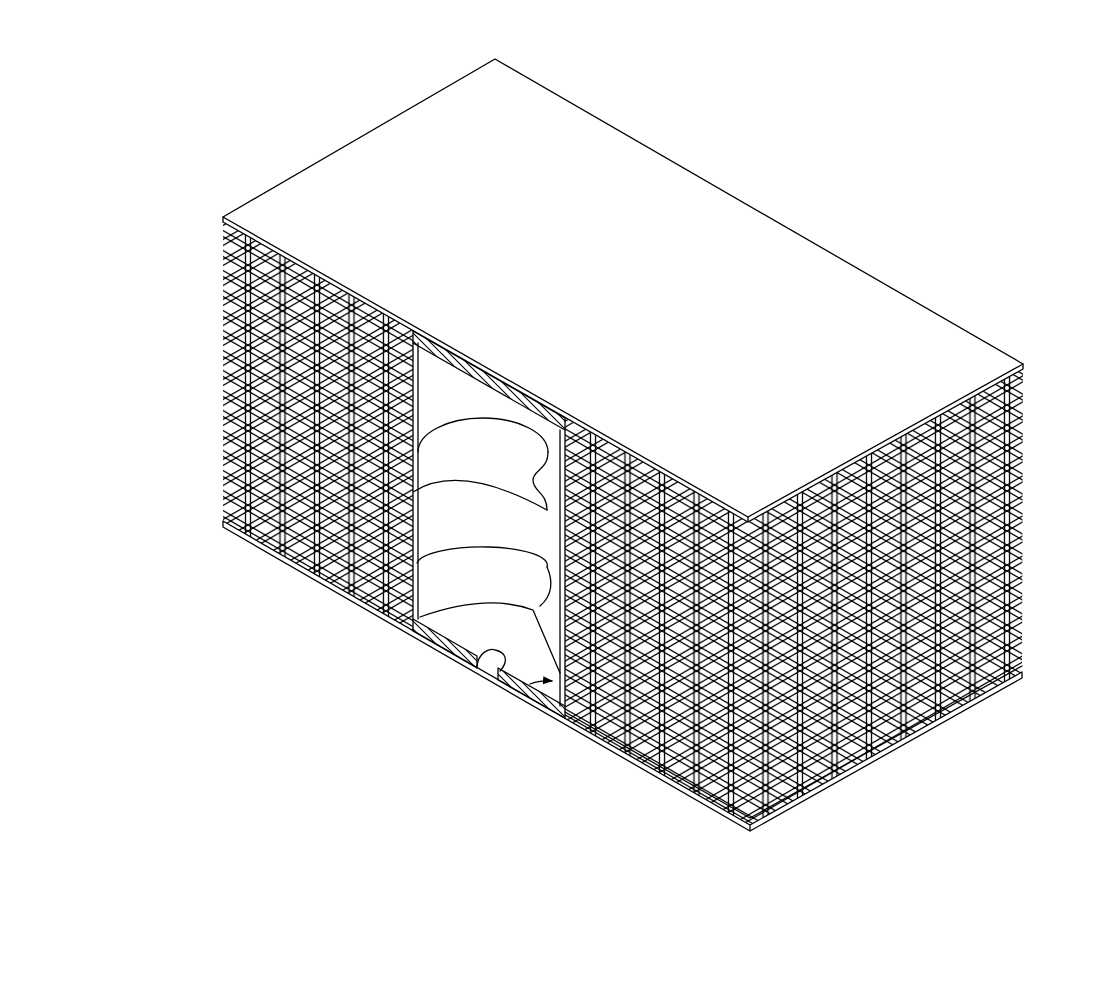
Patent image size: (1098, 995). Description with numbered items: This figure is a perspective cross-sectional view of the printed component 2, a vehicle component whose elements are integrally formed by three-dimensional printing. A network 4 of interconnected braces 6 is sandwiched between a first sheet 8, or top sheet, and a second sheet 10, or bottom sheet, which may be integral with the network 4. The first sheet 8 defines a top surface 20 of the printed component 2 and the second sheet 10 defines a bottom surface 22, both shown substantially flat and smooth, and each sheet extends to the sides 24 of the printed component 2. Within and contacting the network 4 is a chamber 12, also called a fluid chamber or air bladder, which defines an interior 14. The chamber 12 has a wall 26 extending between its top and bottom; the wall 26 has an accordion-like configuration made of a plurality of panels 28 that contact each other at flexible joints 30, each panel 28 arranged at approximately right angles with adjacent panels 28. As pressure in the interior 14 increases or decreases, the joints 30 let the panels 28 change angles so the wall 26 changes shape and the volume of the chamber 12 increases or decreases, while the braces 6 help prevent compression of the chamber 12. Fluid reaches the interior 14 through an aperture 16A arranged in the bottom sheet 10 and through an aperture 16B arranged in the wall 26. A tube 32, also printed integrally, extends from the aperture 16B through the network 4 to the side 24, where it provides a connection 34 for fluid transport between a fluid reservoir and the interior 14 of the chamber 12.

The printed component 2 is at (205, 83).
The network 4 is at (208, 230).
The braces 6 is at (298, 488).
The first sheet 8 is at (452, 105).
The second sheet 10 is at (823, 775).
The chamber 12 is at (433, 337).
The interior 14 is at (475, 595).
The aperture 16A is at (484, 683).
The aperture 16B is at (523, 688).
The top surface 20 is at (906, 334).
The bottom surface 22 is at (993, 694).
The sides 24 is at (221, 398).
The wall 26 is at (427, 534).
The panels 28 is at (467, 436).
The flexible joints 30 is at (440, 362).
The tube 32 is at (612, 728).
The connection 34 is at (773, 811).